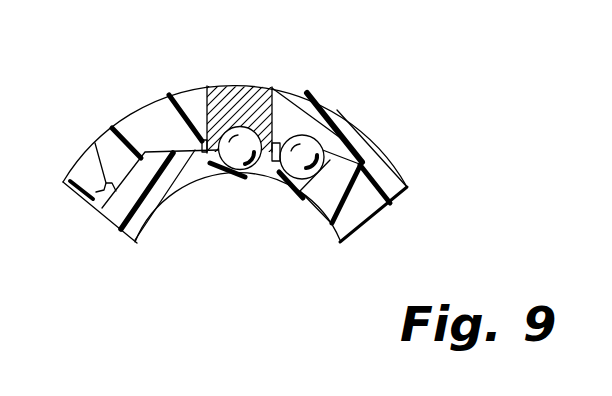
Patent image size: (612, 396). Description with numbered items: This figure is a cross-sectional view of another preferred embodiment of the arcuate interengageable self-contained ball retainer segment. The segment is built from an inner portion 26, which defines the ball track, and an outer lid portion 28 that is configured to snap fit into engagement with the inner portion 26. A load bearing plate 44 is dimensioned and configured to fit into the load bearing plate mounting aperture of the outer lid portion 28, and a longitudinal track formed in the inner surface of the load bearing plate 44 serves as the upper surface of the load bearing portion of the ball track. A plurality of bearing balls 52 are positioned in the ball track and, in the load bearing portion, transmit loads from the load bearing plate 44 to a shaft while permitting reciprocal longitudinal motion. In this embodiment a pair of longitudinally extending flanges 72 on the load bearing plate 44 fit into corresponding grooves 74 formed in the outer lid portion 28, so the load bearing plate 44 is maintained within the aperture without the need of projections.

The inner portion 26 is at (353, 213).
The outer lid portion 28 is at (382, 146).
The load bearing plate 44 is at (240, 100).
The bearing balls 52 is at (239, 143).
The longitudinally extending flanges 72 is at (201, 152).
The grooves 74 is at (174, 134).